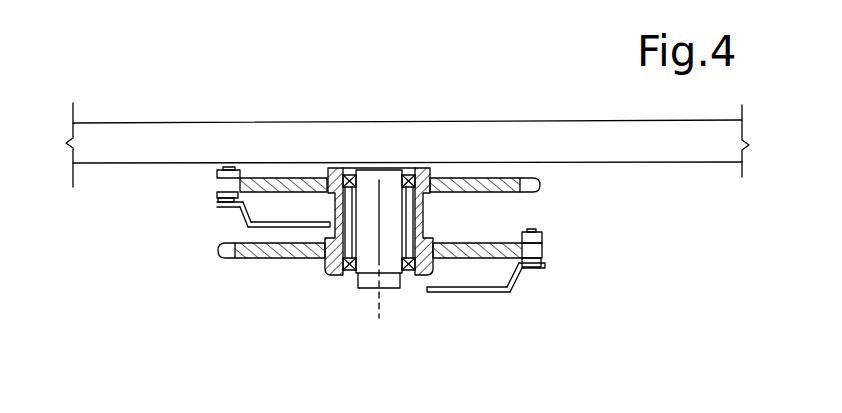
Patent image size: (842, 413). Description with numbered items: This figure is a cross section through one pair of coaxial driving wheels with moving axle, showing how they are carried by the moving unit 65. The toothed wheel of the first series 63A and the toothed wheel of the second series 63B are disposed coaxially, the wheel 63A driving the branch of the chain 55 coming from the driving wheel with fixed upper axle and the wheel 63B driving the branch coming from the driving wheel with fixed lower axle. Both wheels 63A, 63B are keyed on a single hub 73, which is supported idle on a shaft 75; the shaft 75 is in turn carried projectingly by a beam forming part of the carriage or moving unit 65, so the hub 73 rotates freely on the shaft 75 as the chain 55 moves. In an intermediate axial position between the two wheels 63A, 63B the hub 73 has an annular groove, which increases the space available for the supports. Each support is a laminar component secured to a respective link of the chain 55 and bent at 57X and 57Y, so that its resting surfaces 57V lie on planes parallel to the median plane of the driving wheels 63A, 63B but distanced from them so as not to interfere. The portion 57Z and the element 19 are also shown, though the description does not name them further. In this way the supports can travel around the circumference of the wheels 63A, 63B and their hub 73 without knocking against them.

The bearing 19 is at (434, 216).
The chain 55 is at (217, 173).
The resting surfaces 57V is at (470, 293).
The bend of the support 57X is at (538, 299).
The bend of the support 57Y is at (257, 216).
The clip fastening portion 57Z is at (542, 264).
The toothed wheel of the first series 63A is at (258, 262).
The toothed wheel of the second series 63B is at (515, 192).
The moving unit 65 is at (578, 147).
The hub 73 is at (421, 278).
The shaft 75 is at (371, 283).